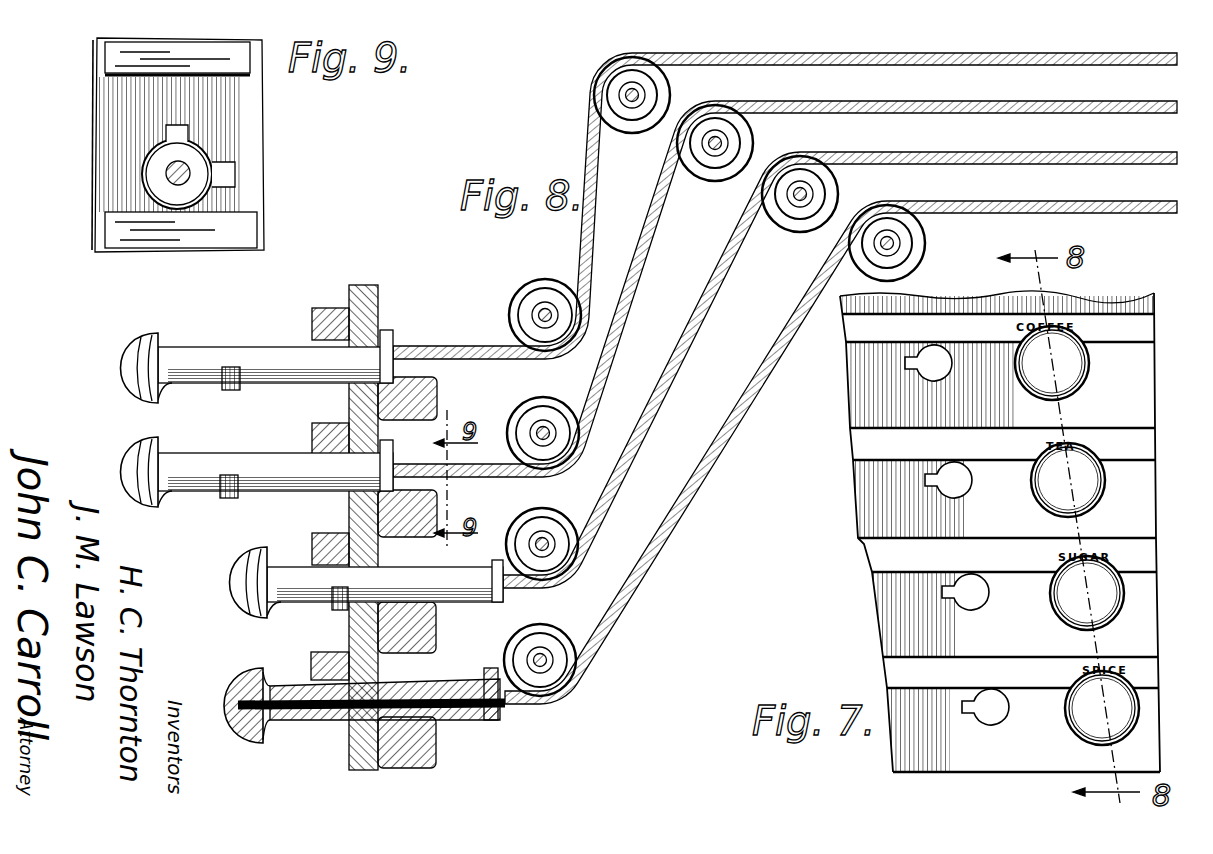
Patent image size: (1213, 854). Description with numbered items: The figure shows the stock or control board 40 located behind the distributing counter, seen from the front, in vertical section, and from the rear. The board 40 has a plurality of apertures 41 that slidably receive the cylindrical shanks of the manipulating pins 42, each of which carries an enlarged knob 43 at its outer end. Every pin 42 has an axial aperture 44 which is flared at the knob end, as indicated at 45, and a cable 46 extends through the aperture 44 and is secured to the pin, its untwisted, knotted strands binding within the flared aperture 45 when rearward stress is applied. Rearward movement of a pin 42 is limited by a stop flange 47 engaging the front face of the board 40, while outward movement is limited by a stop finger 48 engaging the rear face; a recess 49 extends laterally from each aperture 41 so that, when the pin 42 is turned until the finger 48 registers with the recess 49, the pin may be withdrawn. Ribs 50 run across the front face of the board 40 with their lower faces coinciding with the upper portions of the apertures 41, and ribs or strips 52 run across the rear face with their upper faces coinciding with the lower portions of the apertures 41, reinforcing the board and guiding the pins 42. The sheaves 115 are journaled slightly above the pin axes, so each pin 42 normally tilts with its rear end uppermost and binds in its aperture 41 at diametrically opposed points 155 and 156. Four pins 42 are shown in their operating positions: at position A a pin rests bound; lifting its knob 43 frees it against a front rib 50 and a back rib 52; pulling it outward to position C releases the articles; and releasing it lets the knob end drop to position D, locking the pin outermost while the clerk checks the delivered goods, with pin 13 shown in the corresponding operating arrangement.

In FIG. 8, the operating rod 13 is at (240, 592).
In FIG. 9, the stock or control board 40 is at (250, 146).
In FIG. 8, the stock or control board 40 is at (368, 288).
In FIG. 8, the aperture 41 is at (378, 458).
In FIG. 7, the aperture 41 is at (922, 378).
In FIG. 9, the manipulating pin 42 is at (172, 194).
In FIG. 8, the manipulating pin 42 is at (214, 347).
In FIG. 8, the knob 43 is at (128, 347).
In FIG. 7, the knob 43 is at (1072, 368).
In FIG. 8, the axial aperture 44 is at (282, 692).
In FIG. 8, the flared aperture 45 is at (240, 680).
In FIG. 9, the cable 46 is at (172, 181).
In FIG. 8, the cable 46 is at (586, 137).
In FIG. 8, the stop flange 47 is at (229, 391).
In FIG. 9, the stop finger 48 is at (183, 134).
In FIG. 8, the stop finger 48 is at (396, 336).
In FIG. 9, the recess 49 is at (237, 182).
In FIG. 7, the recess 49 is at (905, 363).
In FIG. 8, the rib 50 is at (322, 308).
In FIG. 7, the rib 50 is at (940, 318).
In FIG. 9, the rib or strip 52 is at (180, 50).
In FIG. 8, the rib or strip 52 is at (438, 386).
In FIG. 8, the sheave 115 is at (538, 288).
In FIG. 8, the binding point 155 is at (352, 376).
In FIG. 8, the binding point 156 is at (392, 336).
In FIG. 8, the normal position A is at (290, 720).
In FIG. 8, the pulled-out position C is at (160, 505).
In FIG. 8, the locked outermost position D is at (124, 374).